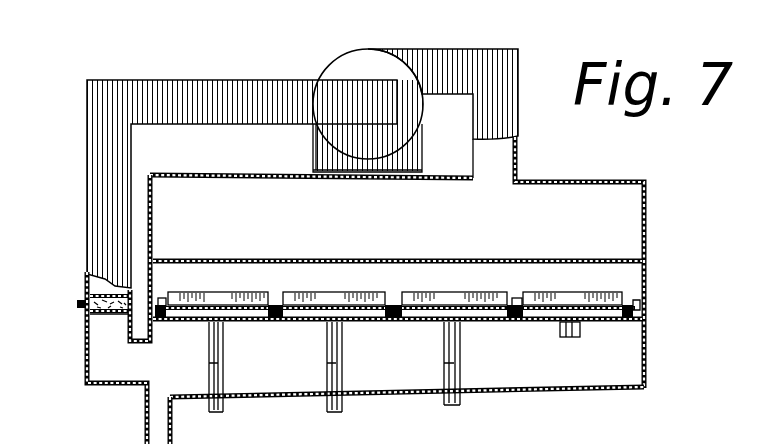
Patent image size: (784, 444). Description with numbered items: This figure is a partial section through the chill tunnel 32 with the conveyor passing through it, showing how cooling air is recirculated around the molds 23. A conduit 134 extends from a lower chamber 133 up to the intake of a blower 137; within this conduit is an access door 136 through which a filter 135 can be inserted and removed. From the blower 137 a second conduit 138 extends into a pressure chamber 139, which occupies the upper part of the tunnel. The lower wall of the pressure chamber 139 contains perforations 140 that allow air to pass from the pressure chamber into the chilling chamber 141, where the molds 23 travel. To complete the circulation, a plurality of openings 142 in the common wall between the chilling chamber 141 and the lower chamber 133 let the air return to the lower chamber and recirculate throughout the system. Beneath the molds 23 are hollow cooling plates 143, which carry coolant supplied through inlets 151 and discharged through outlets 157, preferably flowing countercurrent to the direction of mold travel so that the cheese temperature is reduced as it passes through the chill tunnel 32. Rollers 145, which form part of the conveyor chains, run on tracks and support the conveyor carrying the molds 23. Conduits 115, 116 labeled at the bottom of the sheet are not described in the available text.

The molds 23 is at (248, 292).
The chill tunnel 32 is at (578, 178).
The conduit 115 is at (474, 437).
The conduit 116 is at (550, 437).
The lower chamber 133 is at (292, 388).
The conduit 134 is at (87, 200).
The filter 135 is at (88, 311).
The access door 136 is at (74, 301).
The blower 137 is at (350, 52).
The conduit 138 is at (480, 49).
The pressure chamber 139 is at (488, 228).
The perforations 140 is at (222, 262).
The chilling chamber 141 is at (388, 292).
The openings 142 is at (165, 321).
The hollow cooling plates 143 is at (455, 305).
The rollers 145 is at (161, 300).
The inlets 151 is at (209, 363).
The outlets 157 is at (209, 382).